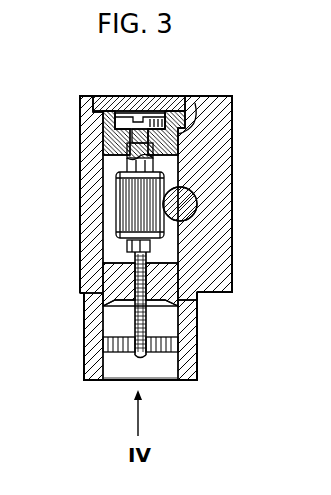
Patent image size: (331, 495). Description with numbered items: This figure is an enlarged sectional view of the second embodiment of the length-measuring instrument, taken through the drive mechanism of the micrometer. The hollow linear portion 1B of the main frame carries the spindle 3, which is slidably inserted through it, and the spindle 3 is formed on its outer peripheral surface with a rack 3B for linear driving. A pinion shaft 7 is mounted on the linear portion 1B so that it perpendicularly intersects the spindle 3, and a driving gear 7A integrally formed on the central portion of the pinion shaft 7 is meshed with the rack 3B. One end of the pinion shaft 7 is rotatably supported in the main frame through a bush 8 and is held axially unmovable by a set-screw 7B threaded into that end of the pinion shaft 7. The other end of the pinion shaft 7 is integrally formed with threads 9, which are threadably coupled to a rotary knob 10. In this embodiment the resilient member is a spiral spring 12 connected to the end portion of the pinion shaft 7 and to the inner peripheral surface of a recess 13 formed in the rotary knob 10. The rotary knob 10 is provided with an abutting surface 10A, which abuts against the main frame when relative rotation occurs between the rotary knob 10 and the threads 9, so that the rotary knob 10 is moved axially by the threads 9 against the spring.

The linear portion 1B is at (222, 106).
The spindle 3 is at (197, 202).
The rack 3B is at (173, 178).
The pinion shaft 7 is at (125, 257).
The driving gear 7A is at (122, 192).
The set-screw 7B is at (134, 118).
The bush 8 is at (192, 104).
The threads 9 is at (120, 277).
The rotary knob 10 is at (90, 325).
The abutting surface 10A is at (196, 287).
The spiral spring 12 is at (166, 349).
The recess 13 is at (122, 368).